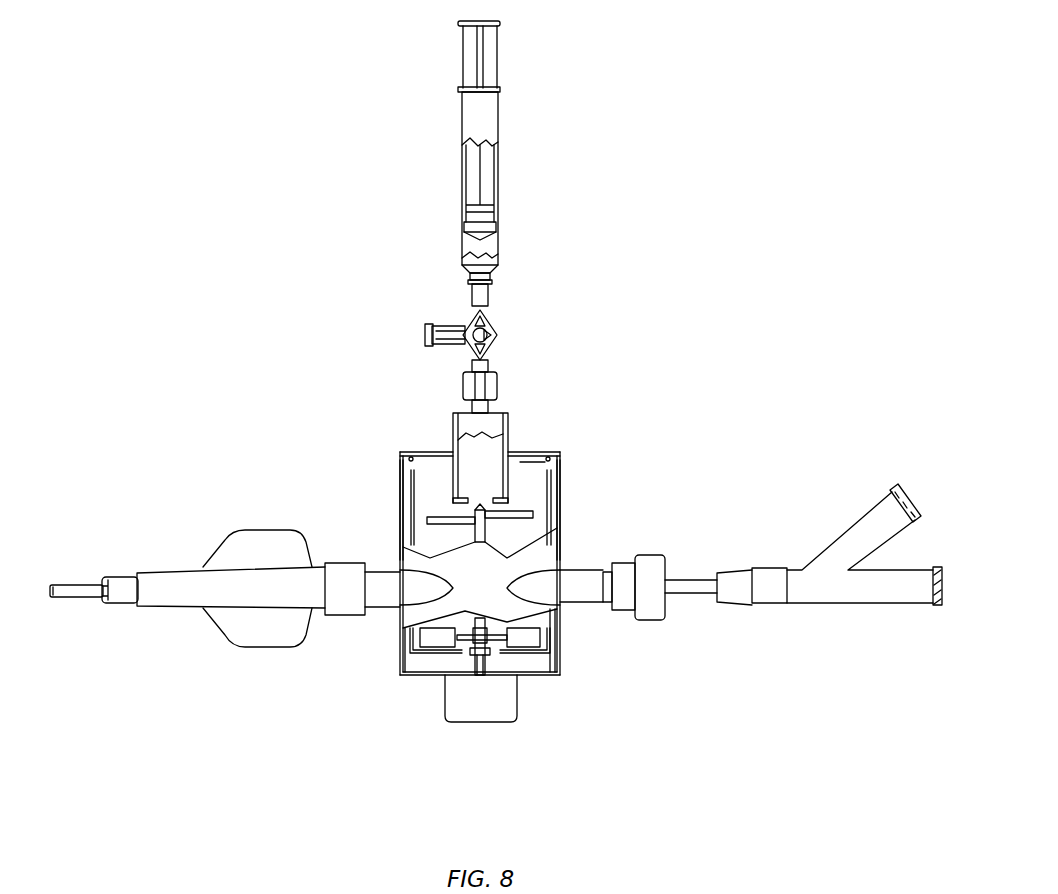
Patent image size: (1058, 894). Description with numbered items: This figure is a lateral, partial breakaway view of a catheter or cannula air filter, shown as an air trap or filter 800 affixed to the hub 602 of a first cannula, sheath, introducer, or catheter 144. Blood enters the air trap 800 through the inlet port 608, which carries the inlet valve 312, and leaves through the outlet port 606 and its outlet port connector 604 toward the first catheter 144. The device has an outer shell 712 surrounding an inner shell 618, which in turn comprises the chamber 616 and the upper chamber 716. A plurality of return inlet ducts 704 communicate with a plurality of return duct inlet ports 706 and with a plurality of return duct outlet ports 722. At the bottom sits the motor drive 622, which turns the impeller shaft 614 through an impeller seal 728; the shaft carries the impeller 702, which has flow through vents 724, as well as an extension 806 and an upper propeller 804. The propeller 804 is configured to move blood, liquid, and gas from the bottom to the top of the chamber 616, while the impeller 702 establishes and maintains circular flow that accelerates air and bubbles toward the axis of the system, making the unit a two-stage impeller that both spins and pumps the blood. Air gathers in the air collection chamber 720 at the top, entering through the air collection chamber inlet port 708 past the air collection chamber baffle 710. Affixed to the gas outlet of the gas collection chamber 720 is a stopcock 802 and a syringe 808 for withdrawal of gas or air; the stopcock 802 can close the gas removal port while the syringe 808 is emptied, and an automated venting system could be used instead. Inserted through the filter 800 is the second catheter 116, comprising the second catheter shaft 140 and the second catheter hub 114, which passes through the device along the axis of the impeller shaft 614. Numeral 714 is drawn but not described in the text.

The air trap or filter 800 is at (294, 423).
The syringe 808 is at (487, 128).
The stopcock 802 is at (489, 297).
The air collection chamber 720 is at (497, 425).
The upper propeller 804 is at (510, 500).
The upper chamber 716 is at (535, 470).
The return duct inlet port 706 is at (412, 468).
The return inlet duct 704 is at (404, 500).
The outer shell 712 is at (560, 555).
The air collection chamber baffle 710 is at (462, 503).
The air collection chamber inlet port 708 is at (482, 502).
The chamber 616 is at (452, 508).
The extension 806 is at (473, 538).
The outlet port 606 is at (408, 592).
The inlet port 608 is at (575, 590).
The impeller 702 is at (435, 638).
The inner shell 618 is at (550, 637).
The flow through vents 724 is at (460, 635).
The return duct outlet port 722 is at (505, 655).
The lower post 714 is at (508, 667).
The impeller seal 728 is at (474, 658).
The impeller shaft 614 is at (478, 652).
The motor drive 622 is at (493, 705).
The second catheter shaft 140 is at (77, 592).
The first cannula, sheath, introducer, or catheter 144 is at (123, 592).
The hub 602 is at (262, 577).
The outlet port connector 604 is at (355, 585).
The inlet valve 312 is at (655, 567).
The second catheter 116 is at (685, 588).
The second catheter hub 114 is at (867, 533).